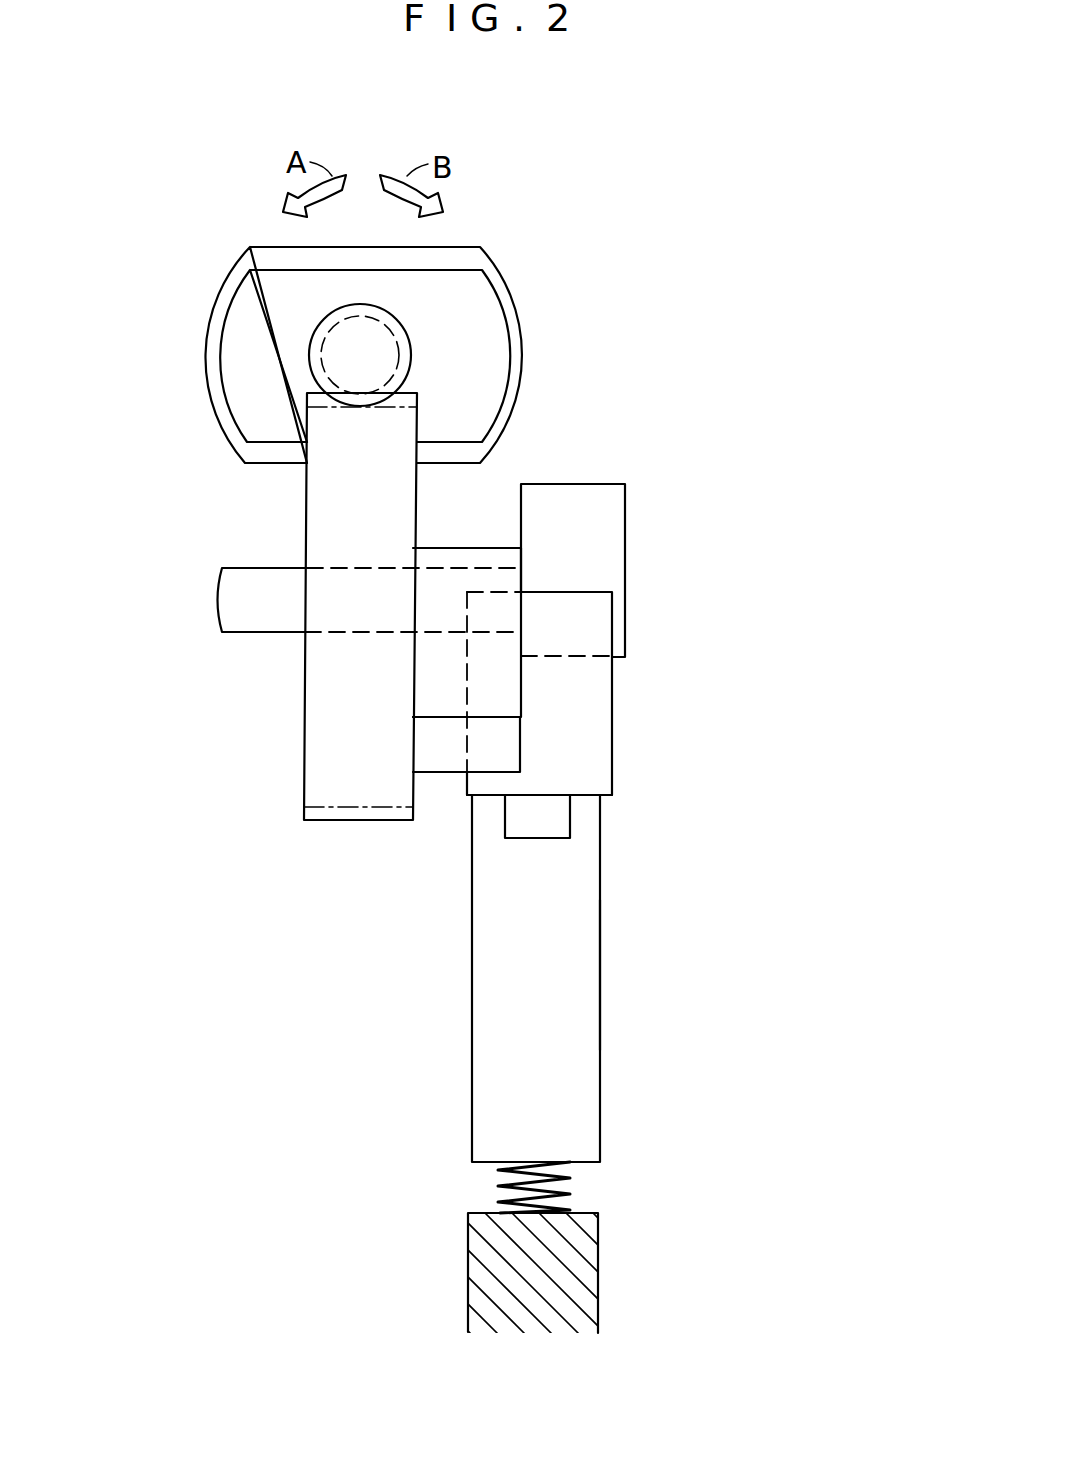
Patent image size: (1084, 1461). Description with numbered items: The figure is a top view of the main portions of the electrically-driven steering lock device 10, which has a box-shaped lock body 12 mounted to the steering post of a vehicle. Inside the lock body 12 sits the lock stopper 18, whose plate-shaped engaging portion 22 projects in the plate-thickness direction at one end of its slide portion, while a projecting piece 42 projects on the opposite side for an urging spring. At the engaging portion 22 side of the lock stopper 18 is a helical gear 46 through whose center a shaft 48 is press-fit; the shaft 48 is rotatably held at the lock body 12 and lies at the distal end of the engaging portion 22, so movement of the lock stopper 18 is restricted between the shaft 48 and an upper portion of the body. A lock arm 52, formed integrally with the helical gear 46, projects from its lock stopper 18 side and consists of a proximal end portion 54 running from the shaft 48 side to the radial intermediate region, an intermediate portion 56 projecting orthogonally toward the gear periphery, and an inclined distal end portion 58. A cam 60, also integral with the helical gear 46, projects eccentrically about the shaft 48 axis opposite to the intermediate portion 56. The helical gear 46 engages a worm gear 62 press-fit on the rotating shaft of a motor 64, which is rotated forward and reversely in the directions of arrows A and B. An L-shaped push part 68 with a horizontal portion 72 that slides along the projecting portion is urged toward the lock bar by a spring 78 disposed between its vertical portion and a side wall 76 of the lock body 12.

The electrically-driven steering lock device 10 is at (767, 224).
The lock body 12 is at (601, 1300).
The lock stopper 18 is at (617, 773).
The engaging portion 22 is at (595, 730).
The projecting piece 42 is at (555, 817).
The helical gear 46 is at (307, 712).
The shaft 48 is at (272, 566).
The lock arm 52 is at (522, 677).
The proximal end portion 54 is at (452, 558).
The intermediate portion 56 is at (505, 613).
The distal end portion 58 is at (443, 755).
The cam 60 is at (603, 522).
The worm gear 62 is at (308, 347).
The motor 64 is at (523, 331).
The push part 68 is at (601, 972).
The horizontal portion 72 is at (580, 1068).
The side wall 76 is at (600, 1252).
The spring 78 is at (570, 1193).